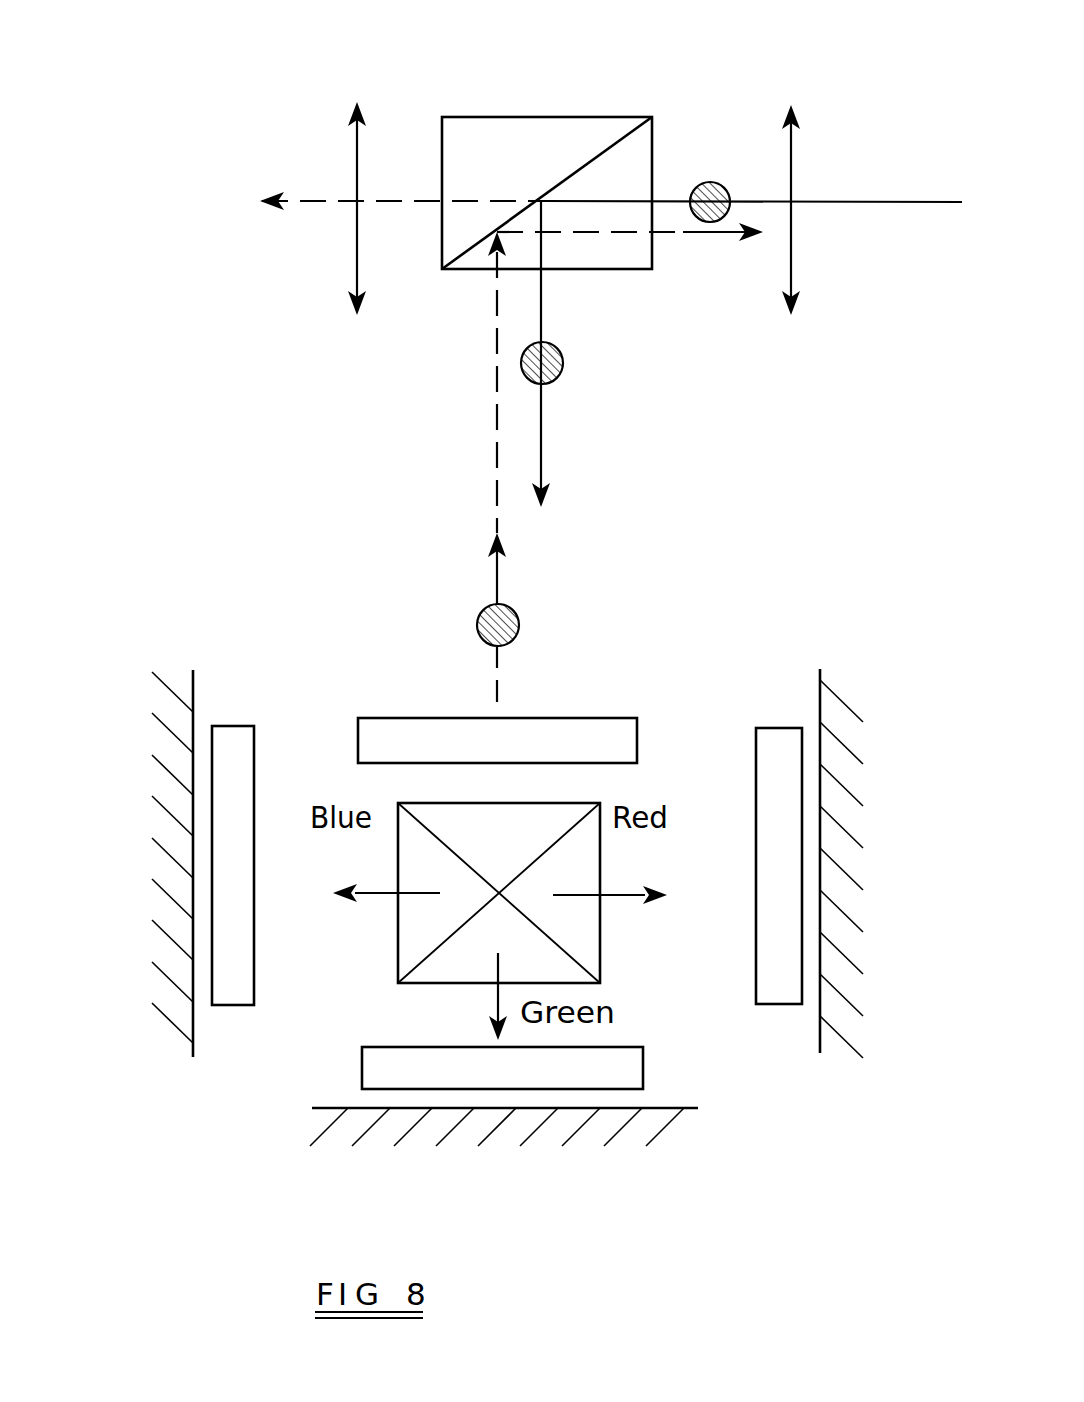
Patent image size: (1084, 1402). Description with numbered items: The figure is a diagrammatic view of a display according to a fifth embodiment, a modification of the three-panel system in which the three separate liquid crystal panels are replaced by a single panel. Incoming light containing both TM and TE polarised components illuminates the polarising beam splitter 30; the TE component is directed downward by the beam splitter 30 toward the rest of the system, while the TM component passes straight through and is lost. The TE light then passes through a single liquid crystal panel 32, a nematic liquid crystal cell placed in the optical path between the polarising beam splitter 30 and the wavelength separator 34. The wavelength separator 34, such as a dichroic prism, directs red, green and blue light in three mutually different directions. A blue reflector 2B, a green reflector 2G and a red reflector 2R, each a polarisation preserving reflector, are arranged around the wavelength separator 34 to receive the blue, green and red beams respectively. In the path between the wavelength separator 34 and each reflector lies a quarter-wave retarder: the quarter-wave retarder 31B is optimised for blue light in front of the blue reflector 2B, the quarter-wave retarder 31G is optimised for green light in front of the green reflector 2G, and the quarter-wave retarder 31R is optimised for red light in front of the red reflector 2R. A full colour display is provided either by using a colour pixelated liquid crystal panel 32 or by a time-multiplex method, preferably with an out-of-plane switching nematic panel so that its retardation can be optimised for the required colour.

The polarising beam splitter 30 is at (652, 122).
The liquid crystal panel 32 is at (602, 718).
The wavelength separator 34 is at (600, 933).
The λ/4 retarder 31B is at (243, 726).
The λ/4 retarder 31R is at (756, 905).
The λ/4 retarder 31G is at (643, 1062).
The reflector 2B is at (170, 973).
The reflector 2R is at (843, 732).
The reflector 2G is at (620, 1121).